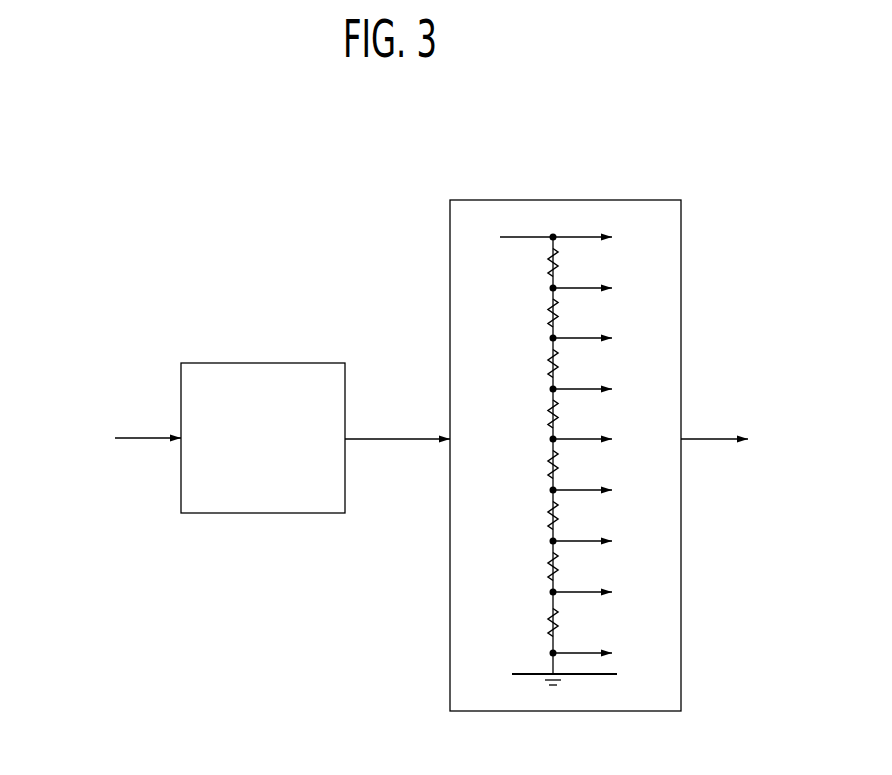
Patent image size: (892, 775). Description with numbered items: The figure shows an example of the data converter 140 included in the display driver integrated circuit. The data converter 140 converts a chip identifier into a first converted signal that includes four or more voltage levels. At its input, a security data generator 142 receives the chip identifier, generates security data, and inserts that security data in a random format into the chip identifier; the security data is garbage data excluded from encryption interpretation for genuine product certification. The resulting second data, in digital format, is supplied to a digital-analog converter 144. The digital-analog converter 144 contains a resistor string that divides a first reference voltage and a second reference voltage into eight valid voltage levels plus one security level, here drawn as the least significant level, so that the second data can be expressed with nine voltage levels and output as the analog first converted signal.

The data converter 140 is at (448, 130).
The security data generator 142 is at (229, 363).
The digital-analog converter 144 is at (583, 200).